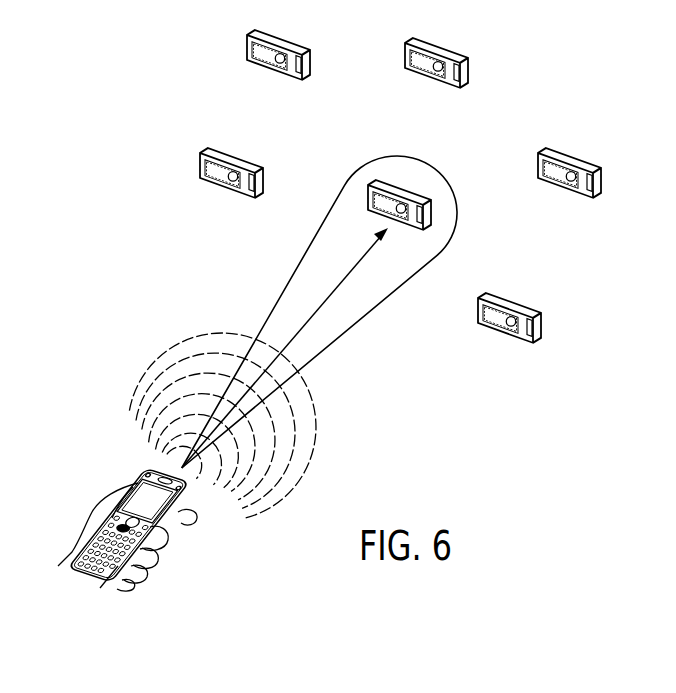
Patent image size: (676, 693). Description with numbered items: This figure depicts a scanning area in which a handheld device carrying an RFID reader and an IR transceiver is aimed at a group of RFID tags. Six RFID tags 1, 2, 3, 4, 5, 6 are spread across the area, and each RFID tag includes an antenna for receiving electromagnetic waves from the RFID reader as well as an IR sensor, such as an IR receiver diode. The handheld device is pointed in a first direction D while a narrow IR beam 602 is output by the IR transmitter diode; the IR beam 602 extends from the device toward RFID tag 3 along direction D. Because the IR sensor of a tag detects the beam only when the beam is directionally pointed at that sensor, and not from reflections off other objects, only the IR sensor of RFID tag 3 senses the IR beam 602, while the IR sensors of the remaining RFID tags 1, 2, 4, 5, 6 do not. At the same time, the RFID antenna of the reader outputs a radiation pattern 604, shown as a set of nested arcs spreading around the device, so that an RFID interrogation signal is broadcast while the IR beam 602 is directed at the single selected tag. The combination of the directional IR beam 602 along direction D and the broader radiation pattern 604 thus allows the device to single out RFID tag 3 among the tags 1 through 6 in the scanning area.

The RFID tag 1 is at (231, 166).
The RFID tag 2 is at (278, 50).
The RFID tag 3 is at (399, 201).
The RFID tag 4 is at (436, 55).
The RFID tag 5 is at (569, 167).
The RFID tag 6 is at (509, 310).
The IR beam 602 is at (358, 320).
The radiation pattern 604 is at (315, 441).
The direction D is at (285, 348).